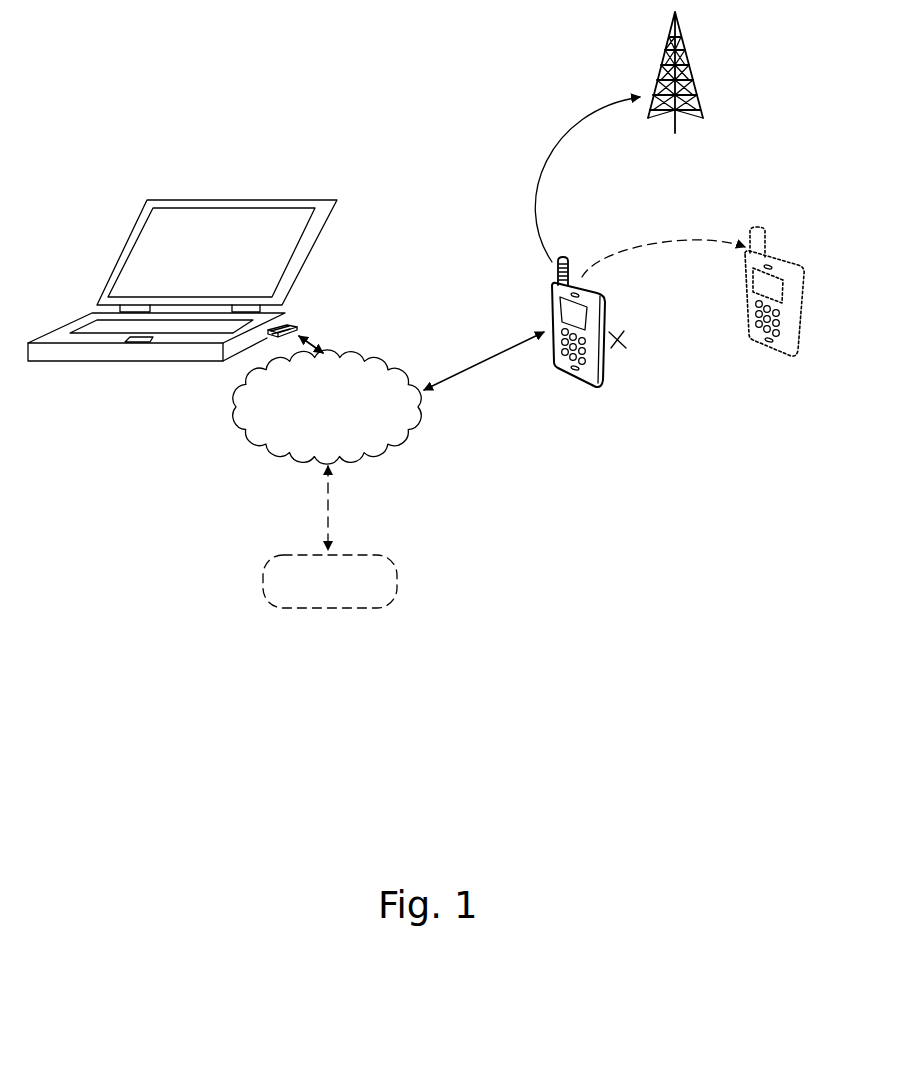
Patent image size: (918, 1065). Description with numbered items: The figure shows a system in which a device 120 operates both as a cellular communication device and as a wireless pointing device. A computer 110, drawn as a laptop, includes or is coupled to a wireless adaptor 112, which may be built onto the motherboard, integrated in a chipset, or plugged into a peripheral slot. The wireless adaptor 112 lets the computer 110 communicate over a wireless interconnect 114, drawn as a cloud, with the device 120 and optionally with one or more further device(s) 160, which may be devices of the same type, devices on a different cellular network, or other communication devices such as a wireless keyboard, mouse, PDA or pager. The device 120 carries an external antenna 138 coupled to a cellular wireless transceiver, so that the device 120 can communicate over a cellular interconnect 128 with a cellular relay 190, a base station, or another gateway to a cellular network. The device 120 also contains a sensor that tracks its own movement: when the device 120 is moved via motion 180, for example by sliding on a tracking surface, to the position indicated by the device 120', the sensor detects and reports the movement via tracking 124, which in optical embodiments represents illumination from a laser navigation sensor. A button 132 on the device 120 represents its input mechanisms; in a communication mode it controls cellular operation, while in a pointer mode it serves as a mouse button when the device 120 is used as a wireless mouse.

The computer 110 is at (194, 199).
The wireless adaptor 112 is at (286, 317).
The wireless interconnect 114 is at (310, 441).
The device 120 is at (621, 359).
The device (moved position) 120' is at (782, 322).
The tracking 124 is at (623, 340).
The cellular interconnect 128 is at (595, 118).
The button 132 is at (565, 354).
The antenna 138 is at (557, 265).
The device(s) 160 is at (313, 605).
The motion 180 is at (650, 241).
The cellular relay 190 is at (692, 80).